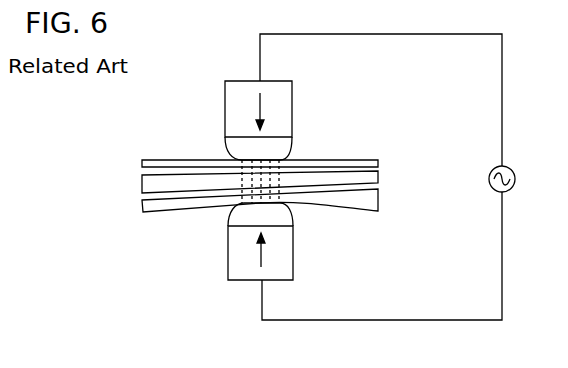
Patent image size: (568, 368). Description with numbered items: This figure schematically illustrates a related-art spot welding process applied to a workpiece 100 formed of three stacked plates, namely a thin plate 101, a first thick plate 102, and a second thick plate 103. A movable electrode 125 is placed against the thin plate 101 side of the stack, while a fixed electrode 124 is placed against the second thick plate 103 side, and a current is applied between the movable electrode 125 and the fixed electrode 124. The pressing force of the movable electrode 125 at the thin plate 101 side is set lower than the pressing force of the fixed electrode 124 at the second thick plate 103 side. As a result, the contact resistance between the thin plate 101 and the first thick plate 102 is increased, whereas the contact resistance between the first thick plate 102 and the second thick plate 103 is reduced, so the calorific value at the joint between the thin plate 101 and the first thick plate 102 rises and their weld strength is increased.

The workpiece 100 is at (225, 164).
The thin plate 101 is at (145, 165).
The first thick plate 102 is at (147, 180).
The second thick plate 103 is at (147, 204).
The fixed electrode 124 is at (227, 252).
The movable electrode 125 is at (226, 111).